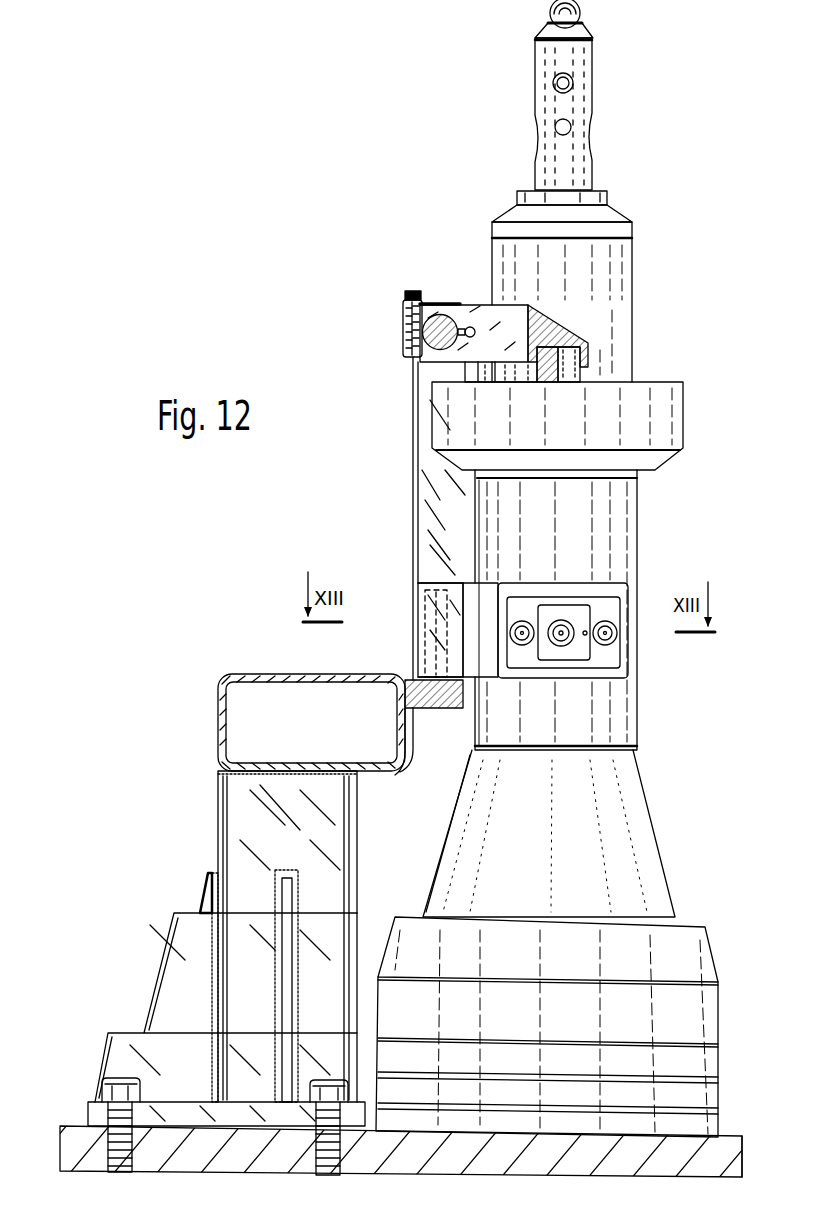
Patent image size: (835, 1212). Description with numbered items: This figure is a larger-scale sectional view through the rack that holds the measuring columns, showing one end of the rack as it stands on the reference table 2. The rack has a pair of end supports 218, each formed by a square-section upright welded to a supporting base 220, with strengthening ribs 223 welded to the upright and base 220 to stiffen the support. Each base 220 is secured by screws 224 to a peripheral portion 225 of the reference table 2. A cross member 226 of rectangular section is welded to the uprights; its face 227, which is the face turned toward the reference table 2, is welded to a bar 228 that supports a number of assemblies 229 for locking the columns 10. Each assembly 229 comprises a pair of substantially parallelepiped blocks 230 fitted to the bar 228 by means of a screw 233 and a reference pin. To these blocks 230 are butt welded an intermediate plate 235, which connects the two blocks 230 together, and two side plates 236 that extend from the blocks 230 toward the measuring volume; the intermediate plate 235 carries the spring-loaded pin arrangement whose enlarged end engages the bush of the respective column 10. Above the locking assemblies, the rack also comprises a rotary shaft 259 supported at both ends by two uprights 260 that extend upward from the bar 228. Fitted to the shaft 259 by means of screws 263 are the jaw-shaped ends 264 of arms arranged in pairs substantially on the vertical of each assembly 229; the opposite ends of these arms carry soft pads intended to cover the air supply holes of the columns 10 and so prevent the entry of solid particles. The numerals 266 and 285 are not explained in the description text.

The reference table 2 is at (733, 1128).
The column 10 is at (650, 598).
The end support 218 is at (165, 885).
The supporting base 220 is at (95, 1120).
The strengthening rib 223 is at (287, 958).
The screw 224 is at (113, 1078).
The peripheral portion 225 is at (80, 1152).
The cross member 226 is at (236, 678).
The face 227 is at (410, 770).
The bar 228 is at (448, 700).
The locking assembly 229 is at (562, 688).
The block 230 is at (452, 617).
The screw 233 is at (450, 655).
The intermediate plate 235 is at (460, 583).
The side plate 236 is at (477, 597).
The rotary shaft 259 is at (436, 355).
The upright 260 is at (420, 452).
The screw 263 is at (413, 291).
The jaw-shaped end 264 is at (442, 302).
The pin 266 is at (573, 375).
The clamp block 285 is at (487, 322).